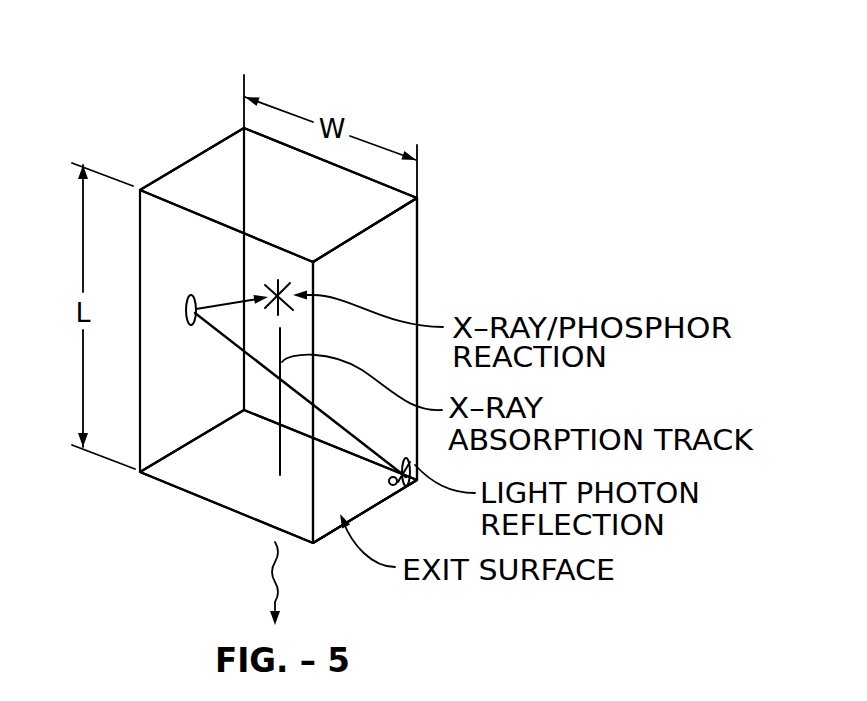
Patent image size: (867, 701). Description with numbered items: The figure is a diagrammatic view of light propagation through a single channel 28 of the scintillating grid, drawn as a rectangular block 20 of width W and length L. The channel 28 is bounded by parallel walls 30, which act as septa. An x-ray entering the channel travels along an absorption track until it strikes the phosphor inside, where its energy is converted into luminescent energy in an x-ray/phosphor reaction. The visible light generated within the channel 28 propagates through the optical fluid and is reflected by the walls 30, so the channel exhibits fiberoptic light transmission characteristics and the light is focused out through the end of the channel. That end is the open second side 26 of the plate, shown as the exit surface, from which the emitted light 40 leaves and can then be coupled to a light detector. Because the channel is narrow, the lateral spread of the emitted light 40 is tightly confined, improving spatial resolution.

The scintillator phosphor block 20 is at (273, 85).
The second side 26 is at (231, 503).
The channel 28 is at (440, 216).
The parallel wall 30 is at (408, 233).
The emitted light 40 is at (282, 603).